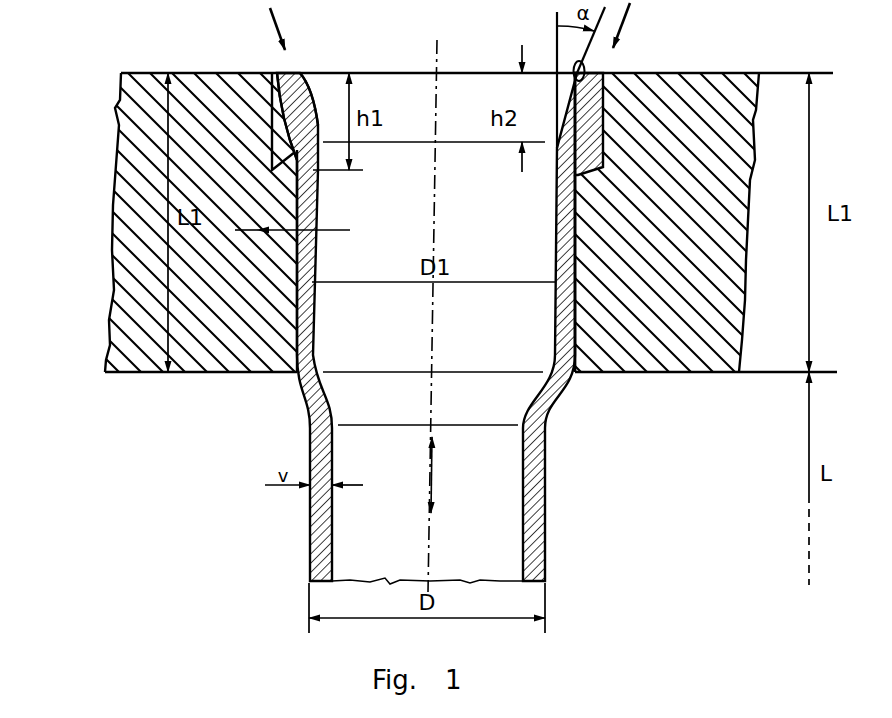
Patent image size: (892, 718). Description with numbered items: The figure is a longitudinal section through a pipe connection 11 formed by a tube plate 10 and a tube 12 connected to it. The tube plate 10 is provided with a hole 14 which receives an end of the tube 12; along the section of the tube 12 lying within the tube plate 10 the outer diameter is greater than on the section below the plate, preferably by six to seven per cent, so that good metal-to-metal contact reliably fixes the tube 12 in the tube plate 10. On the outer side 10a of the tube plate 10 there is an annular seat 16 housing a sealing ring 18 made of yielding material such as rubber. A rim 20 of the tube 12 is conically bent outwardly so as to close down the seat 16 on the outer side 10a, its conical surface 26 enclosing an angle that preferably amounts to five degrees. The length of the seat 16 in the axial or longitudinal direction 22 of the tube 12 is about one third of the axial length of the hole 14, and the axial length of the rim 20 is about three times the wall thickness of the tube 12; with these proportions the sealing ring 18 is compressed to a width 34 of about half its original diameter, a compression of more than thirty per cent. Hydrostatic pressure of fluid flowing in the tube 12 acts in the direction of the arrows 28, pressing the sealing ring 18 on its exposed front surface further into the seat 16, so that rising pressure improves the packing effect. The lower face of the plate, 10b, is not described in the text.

The tube plate 10 is at (135, 268).
The outer side of the tube plate 10a is at (149, 72).
The bottom surface of block 10b is at (128, 377).
The pipe connection 11 is at (563, 397).
The tube 12 is at (548, 483).
The hole 14 is at (573, 250).
The annular seat 16 is at (605, 125).
The sealing ring 18 is at (268, 136).
The rim 20 is at (305, 100).
The axial or longitudinal direction 22 is at (436, 479).
The conical surface 26 is at (586, 62).
The arrows 28 is at (273, 24).
The width 34 is at (290, 230).